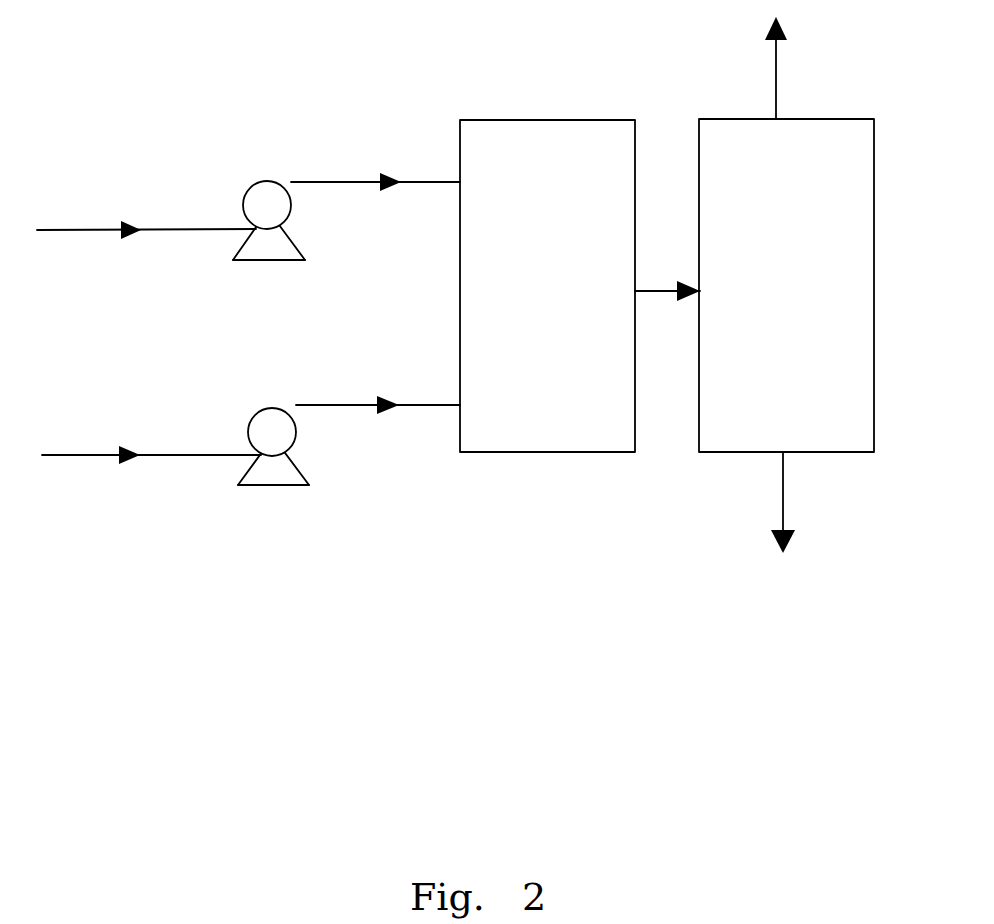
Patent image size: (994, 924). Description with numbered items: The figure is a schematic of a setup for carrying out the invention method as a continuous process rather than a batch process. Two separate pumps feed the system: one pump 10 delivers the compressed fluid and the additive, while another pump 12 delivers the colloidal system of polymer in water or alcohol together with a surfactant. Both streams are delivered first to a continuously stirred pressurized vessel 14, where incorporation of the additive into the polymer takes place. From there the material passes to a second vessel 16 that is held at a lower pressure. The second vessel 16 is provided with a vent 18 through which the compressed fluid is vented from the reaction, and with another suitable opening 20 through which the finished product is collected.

The pump 10 is at (248, 191).
The pump 12 is at (249, 428).
The continuously stirred pressurized vessel 14 is at (547, 286).
The second vessel 16 is at (786, 285).
The vent 18 is at (776, 72).
The opening 20 is at (783, 492).